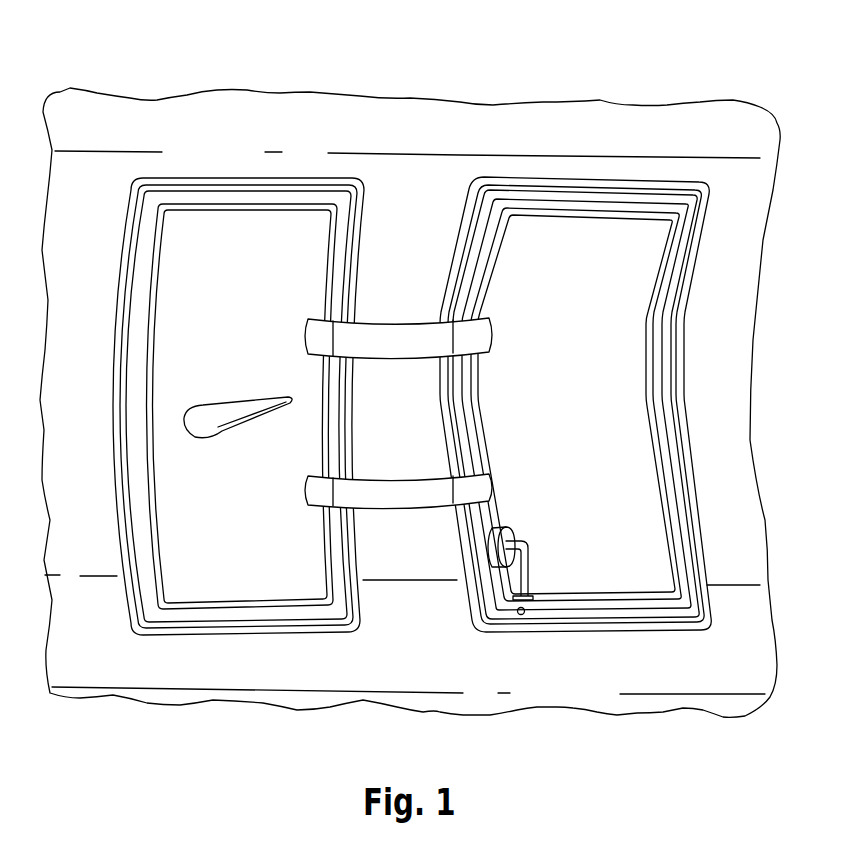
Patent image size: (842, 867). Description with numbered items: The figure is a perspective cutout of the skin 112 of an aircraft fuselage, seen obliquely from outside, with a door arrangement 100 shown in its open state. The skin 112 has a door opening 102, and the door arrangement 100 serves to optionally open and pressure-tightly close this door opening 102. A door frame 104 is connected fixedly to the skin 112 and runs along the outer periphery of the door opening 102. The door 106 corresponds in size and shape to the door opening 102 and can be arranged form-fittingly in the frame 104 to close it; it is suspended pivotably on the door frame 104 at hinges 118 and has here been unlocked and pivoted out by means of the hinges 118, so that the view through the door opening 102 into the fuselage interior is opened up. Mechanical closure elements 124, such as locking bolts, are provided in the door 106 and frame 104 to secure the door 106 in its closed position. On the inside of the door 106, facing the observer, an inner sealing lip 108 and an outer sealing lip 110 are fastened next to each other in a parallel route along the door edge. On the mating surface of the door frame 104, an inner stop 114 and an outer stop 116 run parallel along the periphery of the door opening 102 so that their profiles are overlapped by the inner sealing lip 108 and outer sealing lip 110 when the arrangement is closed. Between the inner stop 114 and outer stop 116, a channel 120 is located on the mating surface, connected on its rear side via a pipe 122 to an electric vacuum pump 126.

The door arrangement 100 is at (679, 132).
The door opening 102 is at (554, 301).
The door frame 104 is at (562, 182).
The door 106 is at (215, 266).
The inner sealing lip 108 is at (151, 332).
The outer sealing lip 110 is at (123, 353).
The skin 112 is at (383, 661).
The inner stop 114 is at (647, 350).
The outer stop 116 is at (678, 325).
The hinges 118 is at (377, 497).
The channel 120 is at (527, 604).
The pipe 122 is at (527, 558).
The mechanical closure elements 124 is at (208, 425).
The electric vacuum pump 126 is at (495, 527).